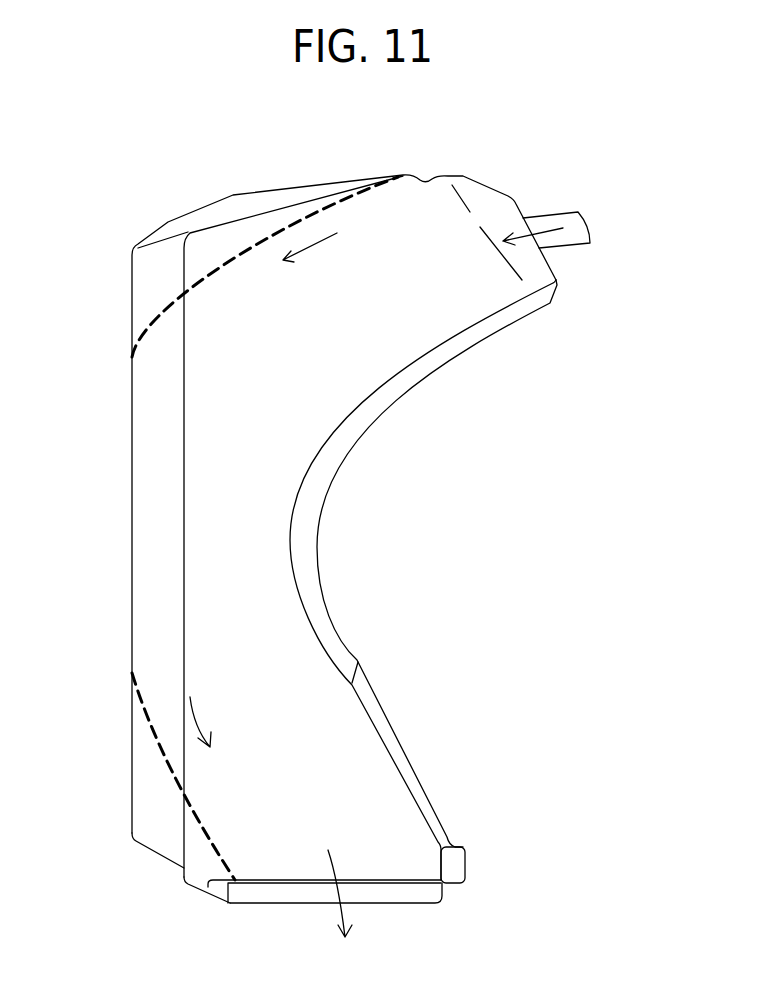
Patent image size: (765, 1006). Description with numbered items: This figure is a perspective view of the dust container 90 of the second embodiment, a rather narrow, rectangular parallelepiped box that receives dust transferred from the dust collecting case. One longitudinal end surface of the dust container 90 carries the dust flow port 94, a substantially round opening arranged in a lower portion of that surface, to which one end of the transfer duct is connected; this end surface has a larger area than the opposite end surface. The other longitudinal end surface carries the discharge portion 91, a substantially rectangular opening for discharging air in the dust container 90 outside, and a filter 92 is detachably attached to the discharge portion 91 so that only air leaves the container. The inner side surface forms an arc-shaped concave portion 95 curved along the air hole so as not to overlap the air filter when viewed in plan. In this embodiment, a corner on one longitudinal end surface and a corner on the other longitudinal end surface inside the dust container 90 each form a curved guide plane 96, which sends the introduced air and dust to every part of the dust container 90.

The dust container 90 is at (132, 837).
The discharge portion 91 is at (422, 888).
The filter 92 is at (267, 883).
The dust flow port 94 is at (585, 222).
The arc-shaped concave portion 95 is at (338, 468).
The curved guide plane 96 is at (167, 313).